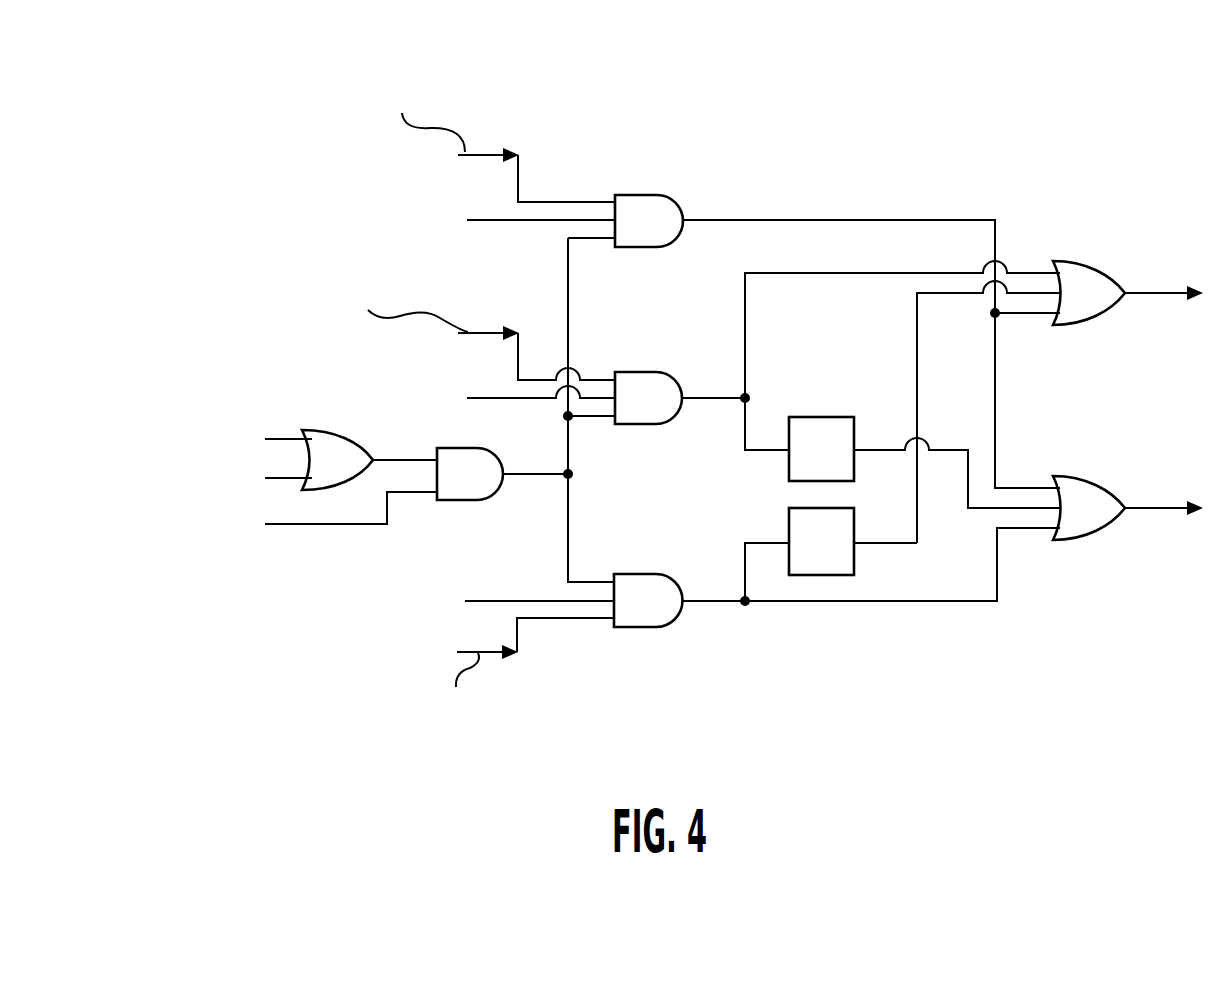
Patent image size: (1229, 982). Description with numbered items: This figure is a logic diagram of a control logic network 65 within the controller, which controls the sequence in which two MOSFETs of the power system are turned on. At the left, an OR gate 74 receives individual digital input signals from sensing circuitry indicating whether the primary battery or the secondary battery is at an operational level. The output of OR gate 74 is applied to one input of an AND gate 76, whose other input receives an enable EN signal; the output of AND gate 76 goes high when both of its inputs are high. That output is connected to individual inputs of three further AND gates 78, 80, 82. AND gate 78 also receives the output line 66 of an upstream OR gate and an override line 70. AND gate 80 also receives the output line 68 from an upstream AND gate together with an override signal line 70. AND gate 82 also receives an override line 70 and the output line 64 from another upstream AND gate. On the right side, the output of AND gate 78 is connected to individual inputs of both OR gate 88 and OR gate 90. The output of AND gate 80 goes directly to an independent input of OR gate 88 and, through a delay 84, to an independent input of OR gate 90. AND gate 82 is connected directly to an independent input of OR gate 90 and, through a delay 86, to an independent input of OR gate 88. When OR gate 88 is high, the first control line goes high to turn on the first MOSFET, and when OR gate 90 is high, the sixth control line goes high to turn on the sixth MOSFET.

The output line from AND gate 58 64 is at (497, 655).
The control logic network 65 is at (810, 152).
The output line of OR gate 62 66 is at (518, 176).
The output line from AND gate 60 68 is at (502, 325).
The override line 70 is at (497, 222).
The OR gate 74 is at (315, 430).
The AND gate 76 is at (463, 502).
The AND gate 78 is at (635, 195).
The AND gate 80 is at (635, 372).
The AND gate 82 is at (647, 628).
The delay 84 is at (818, 417).
The delay 86 is at (789, 525).
The OR gate 88 is at (1080, 262).
The OR gate 90 is at (1100, 535).